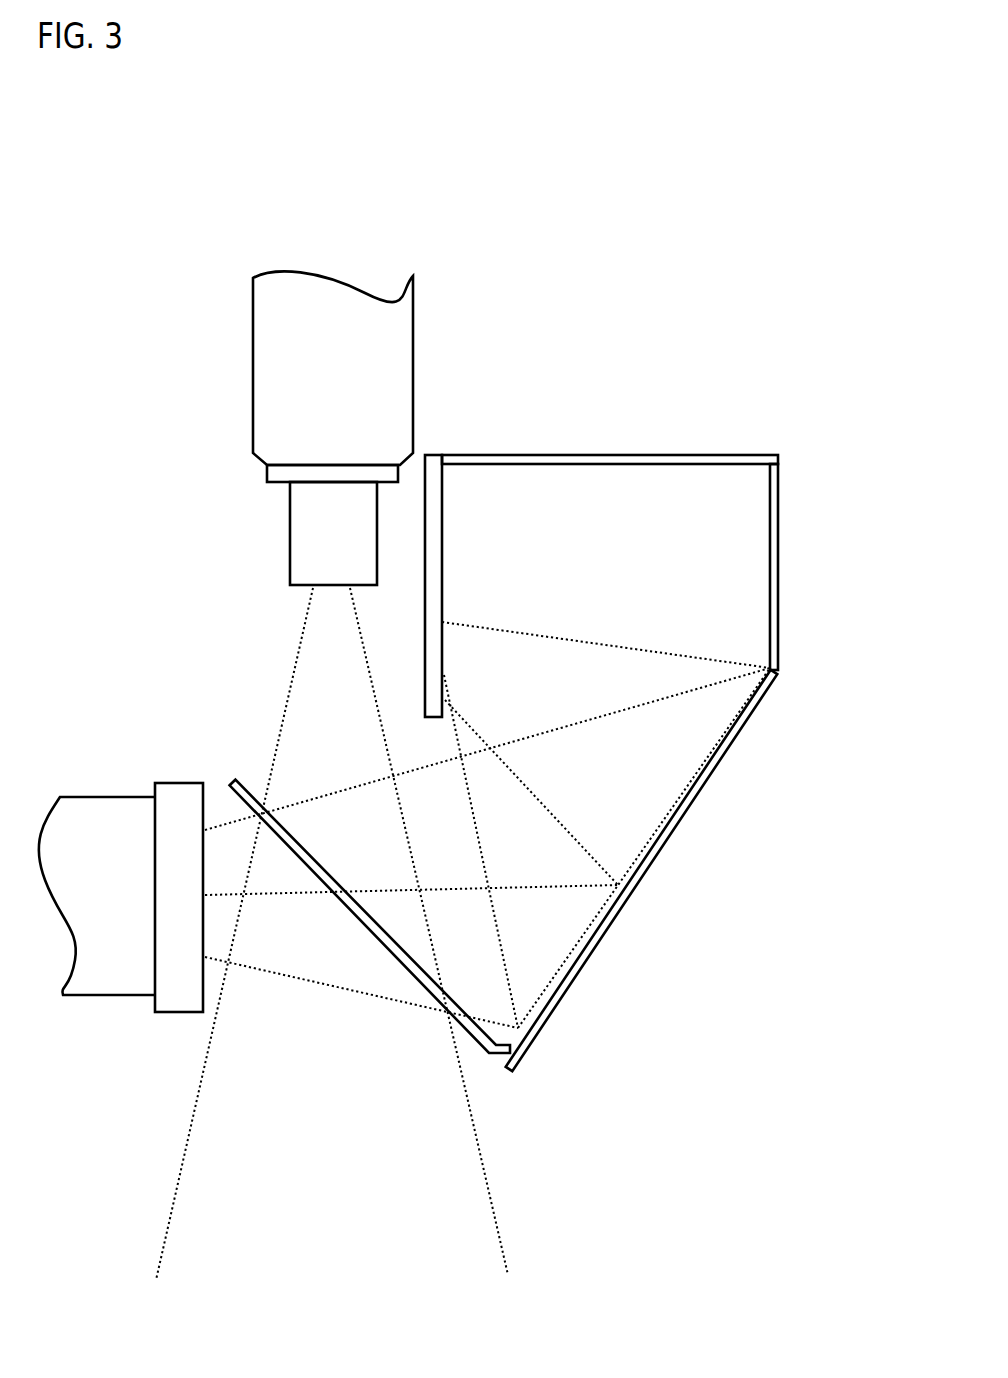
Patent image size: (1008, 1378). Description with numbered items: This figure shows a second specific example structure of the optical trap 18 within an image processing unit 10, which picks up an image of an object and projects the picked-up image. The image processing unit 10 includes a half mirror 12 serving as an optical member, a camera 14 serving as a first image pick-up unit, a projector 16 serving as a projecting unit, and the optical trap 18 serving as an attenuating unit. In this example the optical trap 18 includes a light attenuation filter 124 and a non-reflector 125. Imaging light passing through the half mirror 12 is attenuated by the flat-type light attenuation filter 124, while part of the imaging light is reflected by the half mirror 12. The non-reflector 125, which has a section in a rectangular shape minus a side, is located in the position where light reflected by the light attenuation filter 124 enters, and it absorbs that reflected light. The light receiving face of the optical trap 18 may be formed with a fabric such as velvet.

The image processing unit 10 is at (457, 697).
The half mirror 12 is at (372, 942).
The camera 14 is at (413, 389).
The projector 16 is at (112, 797).
The optical trap 18 is at (652, 628).
The light attenuation filter 124 is at (692, 870).
The non-reflector 125 is at (560, 452).